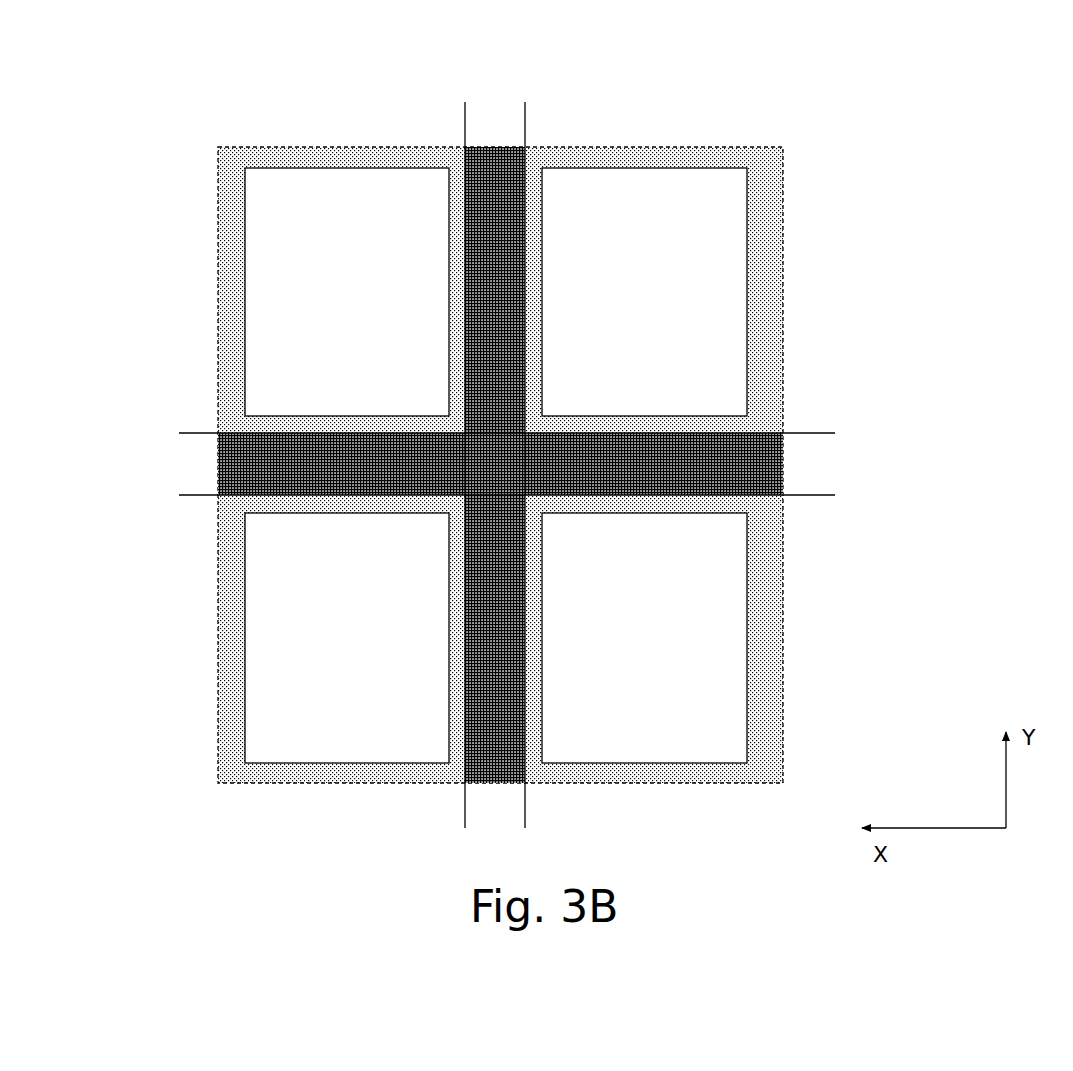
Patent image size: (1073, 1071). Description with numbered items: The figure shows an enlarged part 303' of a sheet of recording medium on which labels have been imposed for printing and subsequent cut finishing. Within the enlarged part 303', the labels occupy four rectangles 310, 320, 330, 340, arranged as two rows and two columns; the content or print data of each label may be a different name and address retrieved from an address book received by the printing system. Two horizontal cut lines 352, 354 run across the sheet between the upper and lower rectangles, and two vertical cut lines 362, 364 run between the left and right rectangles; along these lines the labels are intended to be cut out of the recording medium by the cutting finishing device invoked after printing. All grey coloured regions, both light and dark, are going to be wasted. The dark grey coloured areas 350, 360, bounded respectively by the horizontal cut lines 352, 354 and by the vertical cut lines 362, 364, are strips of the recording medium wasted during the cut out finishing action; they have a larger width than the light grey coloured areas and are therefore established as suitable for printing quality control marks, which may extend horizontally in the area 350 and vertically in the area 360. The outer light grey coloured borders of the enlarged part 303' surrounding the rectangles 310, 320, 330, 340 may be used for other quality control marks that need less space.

The enlarged part 303' is at (500, 424).
The rectangle 310 is at (268, 168).
The rectangle 320 is at (747, 268).
The rectangle 330 is at (245, 680).
The rectangle 340 is at (730, 711).
The dark grey coloured area 350 is at (785, 475).
The horizontal cut line 352 is at (812, 433).
The horizontal cut line 354 is at (822, 497).
The dark grey coloured area 360 is at (495, 147).
The vertical cut line 362 is at (527, 803).
The vertical cut line 364 is at (465, 800).